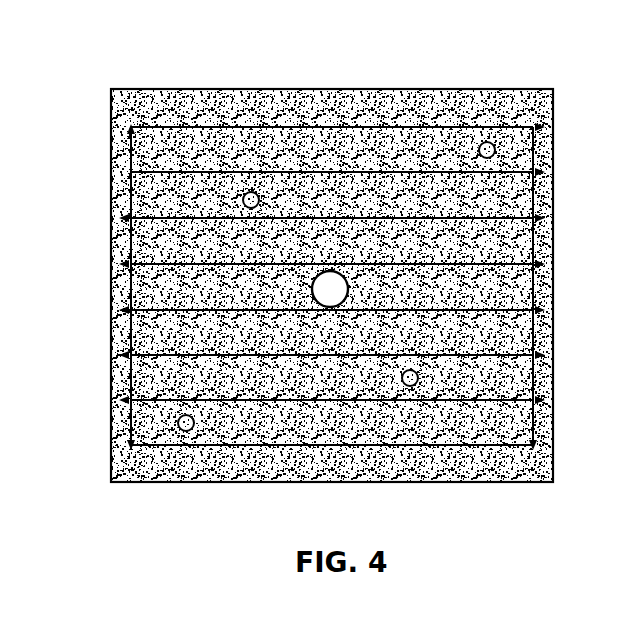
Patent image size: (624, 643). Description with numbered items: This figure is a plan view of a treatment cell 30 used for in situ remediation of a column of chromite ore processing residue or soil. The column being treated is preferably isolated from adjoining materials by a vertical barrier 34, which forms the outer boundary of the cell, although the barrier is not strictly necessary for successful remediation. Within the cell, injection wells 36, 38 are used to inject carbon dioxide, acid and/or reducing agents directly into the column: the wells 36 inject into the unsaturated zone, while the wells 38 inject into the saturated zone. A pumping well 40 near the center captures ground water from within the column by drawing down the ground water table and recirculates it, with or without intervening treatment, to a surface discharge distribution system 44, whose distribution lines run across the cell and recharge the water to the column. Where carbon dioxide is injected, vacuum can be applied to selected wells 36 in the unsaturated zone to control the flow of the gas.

The treatment cell 30 is at (294, 276).
The vertical barrier 34 is at (108, 441).
The injection wells 36 is at (243, 200).
The injection wells 38 is at (486, 142).
The pumping well 40 is at (312, 289).
The surface discharge distribution system 44 is at (129, 162).